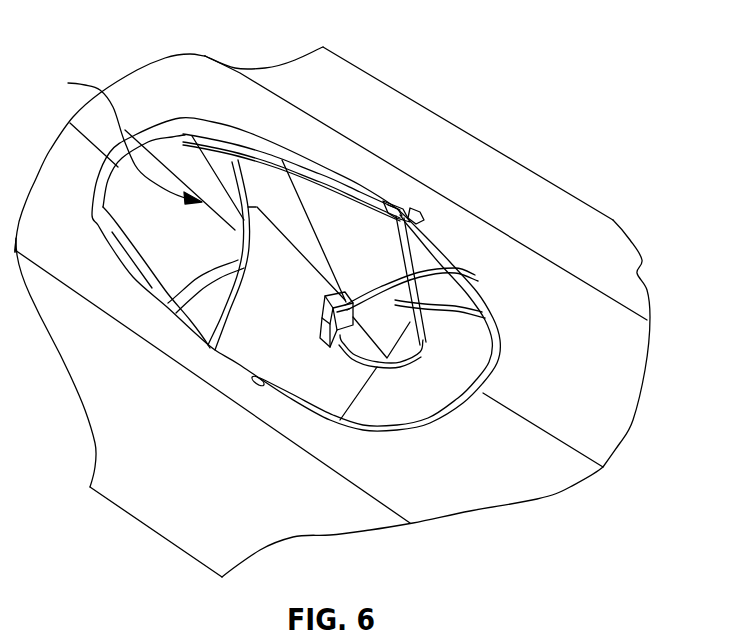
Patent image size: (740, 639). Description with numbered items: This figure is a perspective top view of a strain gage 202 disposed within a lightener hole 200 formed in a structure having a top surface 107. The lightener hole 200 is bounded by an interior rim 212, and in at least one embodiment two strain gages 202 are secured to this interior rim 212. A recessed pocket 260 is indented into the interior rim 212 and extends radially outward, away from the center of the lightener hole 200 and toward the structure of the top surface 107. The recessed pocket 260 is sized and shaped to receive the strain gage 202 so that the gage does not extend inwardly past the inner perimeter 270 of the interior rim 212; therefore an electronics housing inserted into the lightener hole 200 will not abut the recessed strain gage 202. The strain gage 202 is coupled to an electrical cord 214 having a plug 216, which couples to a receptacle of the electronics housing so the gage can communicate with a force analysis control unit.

The top surface 107 is at (517, 183).
The lightener hole 200 is at (111, 136).
The strain gage 202 is at (417, 213).
The interior rim 212 is at (280, 148).
The electrical cord 214 is at (470, 275).
The plug 216 is at (343, 300).
The recessed pocket 260 is at (380, 190).
The inner perimeter 270 is at (250, 160).